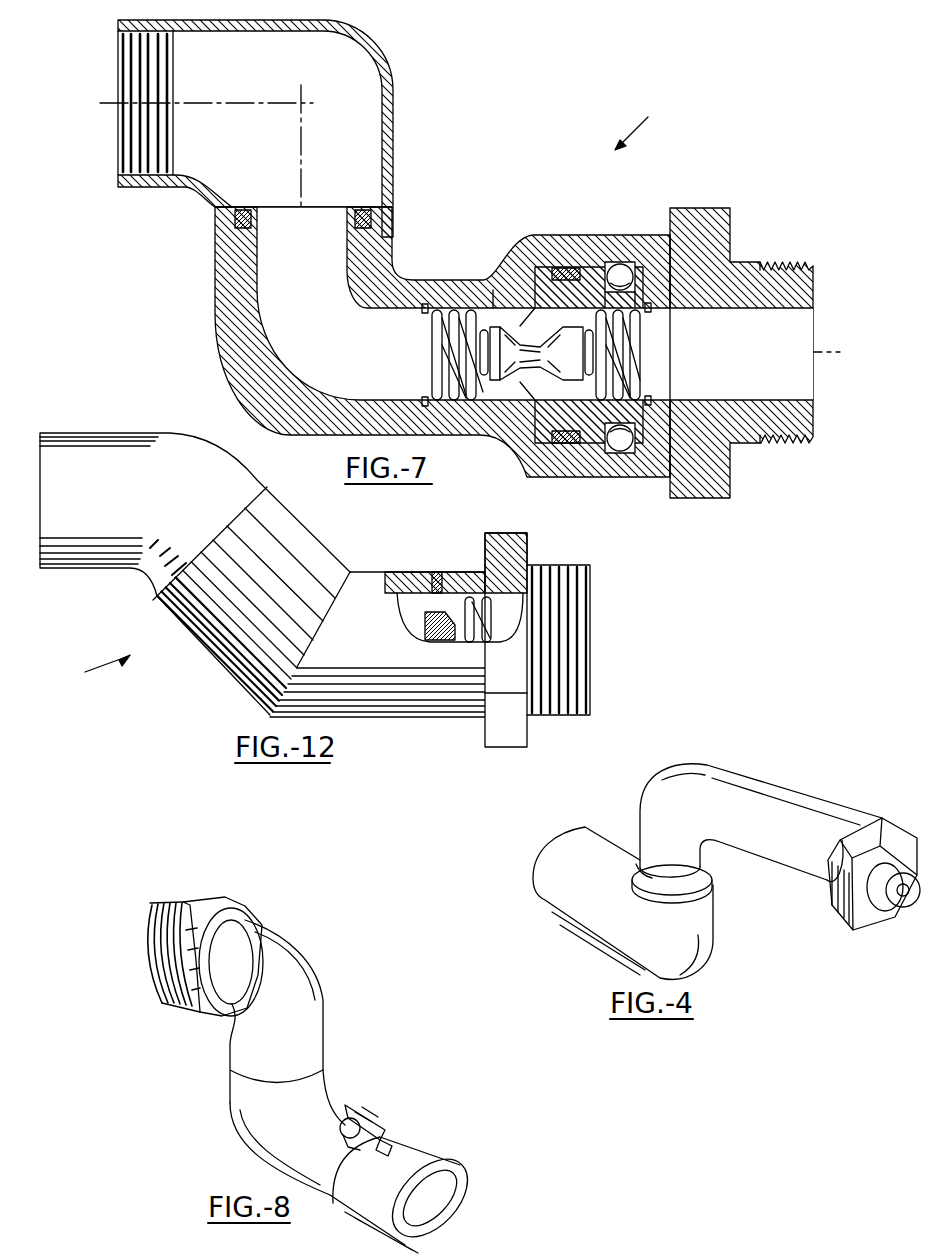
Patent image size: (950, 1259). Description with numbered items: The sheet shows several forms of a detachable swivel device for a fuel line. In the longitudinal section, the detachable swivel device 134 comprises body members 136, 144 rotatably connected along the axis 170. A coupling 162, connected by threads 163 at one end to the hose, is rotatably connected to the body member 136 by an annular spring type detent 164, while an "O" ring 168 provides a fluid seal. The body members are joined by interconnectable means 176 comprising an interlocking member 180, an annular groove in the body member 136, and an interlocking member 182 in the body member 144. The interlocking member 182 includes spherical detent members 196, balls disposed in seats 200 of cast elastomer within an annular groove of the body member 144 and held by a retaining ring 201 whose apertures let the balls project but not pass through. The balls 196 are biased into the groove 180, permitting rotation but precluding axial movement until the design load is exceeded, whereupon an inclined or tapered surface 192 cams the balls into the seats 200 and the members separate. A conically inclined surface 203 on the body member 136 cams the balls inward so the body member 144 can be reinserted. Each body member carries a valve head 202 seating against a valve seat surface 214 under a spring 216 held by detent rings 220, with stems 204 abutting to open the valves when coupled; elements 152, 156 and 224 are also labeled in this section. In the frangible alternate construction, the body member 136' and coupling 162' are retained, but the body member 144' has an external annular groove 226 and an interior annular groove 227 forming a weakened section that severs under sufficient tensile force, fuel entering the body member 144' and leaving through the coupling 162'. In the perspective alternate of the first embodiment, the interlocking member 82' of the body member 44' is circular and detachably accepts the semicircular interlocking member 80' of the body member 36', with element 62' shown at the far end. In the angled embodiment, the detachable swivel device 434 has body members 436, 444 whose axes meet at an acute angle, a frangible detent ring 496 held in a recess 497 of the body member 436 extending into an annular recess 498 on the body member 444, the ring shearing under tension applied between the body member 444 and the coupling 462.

In FIG. 7, the threads 163 is at (120, 55).
In FIG. 7, the coupling 162 is at (281, 128).
In FIG. 7, the center axis 152 is at (301, 193).
In FIG. 7, the annular spring type detent 164 is at (240, 210).
In FIG. 7, the "O" ring 168 is at (370, 219).
In FIG. 7, the detachable swivel device 134 is at (653, 126).
In FIG. 7, the cartridge insert 156 is at (580, 262).
In FIG. 7, the interlocking member 180 is at (614, 266).
In FIG. 7, the interconnectable means 176 is at (622, 262).
In FIG. 7, the seats 200 is at (652, 285).
In FIG. 7, the body member 144 is at (741, 353).
In FIG. 7, the valve seat surface 214 is at (497, 320).
In FIG. 7, the valve head 202 is at (508, 288).
In FIG. 8, the valve head 202 is at (366, 1128).
In FIG. 7, the stem 204 is at (492, 326).
In FIG. 8, the stem 204 is at (362, 1120).
In FIG. 7, the body member 136 is at (442, 342).
In FIG. 7, the spring 216 is at (428, 325).
In FIG. 7, the detent rings 220 is at (424, 398).
In FIG. 7, the axis 170 is at (830, 352).
In FIG. 7, the retaining ring 201 is at (640, 415).
In FIG. 7, the conically inclined surface 203 is at (690, 437).
In FIG. 7, the interlocking member 182 is at (565, 452).
In FIG. 7, the spherical detent members 196 is at (610, 452).
In FIG. 7, the inclined or tapered surface 192 is at (655, 455).
In FIG. 7, the throat 224 is at (530, 398).
In FIG. 12, the coupling 462 is at (72, 433).
In FIG. 12, the body member 436 is at (155, 608).
In FIG. 12, the detachable swivel device 434 is at (87, 669).
In FIG. 12, the recess 497 is at (436, 572).
In FIG. 12, the annular recess 498 is at (410, 575).
In FIG. 12, the frangible detent ring 496 is at (440, 573).
In FIG. 12, the body member 444 is at (470, 720).
In FIG. 4, the body member 36' is at (761, 812).
In FIG. 4, the nut 62' is at (873, 854).
In FIG. 4, the interlocking member 80' is at (639, 840).
In FIG. 4, the interlocking member 82' is at (700, 884).
In FIG. 4, the body member 44' is at (654, 903).
In FIG. 8, the coupling 162' is at (238, 946).
In FIG. 8, the body member 136' is at (317, 1082).
In FIG. 8, the annular groove 226 is at (376, 1128).
In FIG. 8, the annular groove 227 is at (386, 1140).
In FIG. 8, the body member 144' is at (427, 1188).